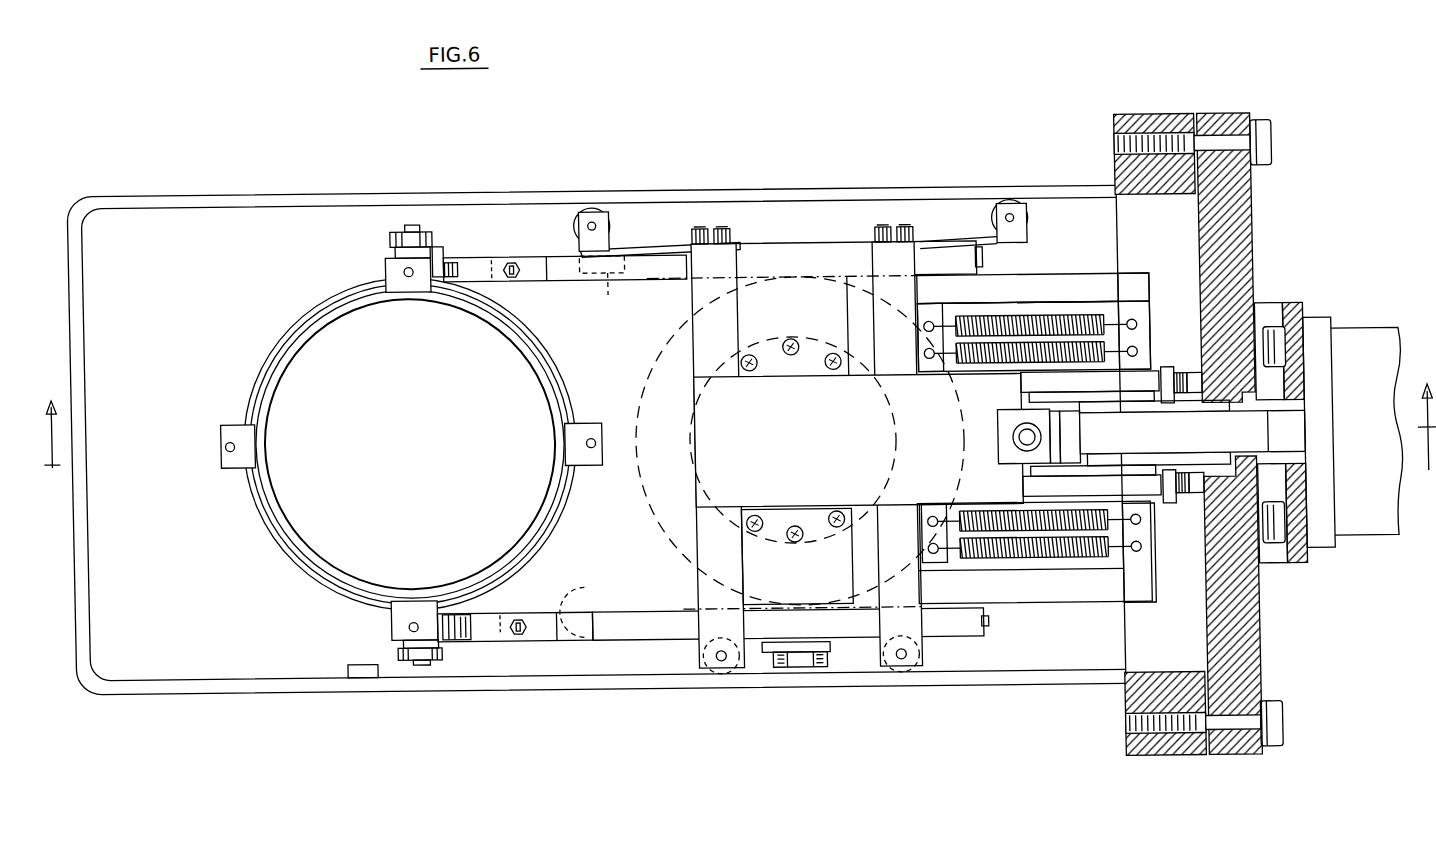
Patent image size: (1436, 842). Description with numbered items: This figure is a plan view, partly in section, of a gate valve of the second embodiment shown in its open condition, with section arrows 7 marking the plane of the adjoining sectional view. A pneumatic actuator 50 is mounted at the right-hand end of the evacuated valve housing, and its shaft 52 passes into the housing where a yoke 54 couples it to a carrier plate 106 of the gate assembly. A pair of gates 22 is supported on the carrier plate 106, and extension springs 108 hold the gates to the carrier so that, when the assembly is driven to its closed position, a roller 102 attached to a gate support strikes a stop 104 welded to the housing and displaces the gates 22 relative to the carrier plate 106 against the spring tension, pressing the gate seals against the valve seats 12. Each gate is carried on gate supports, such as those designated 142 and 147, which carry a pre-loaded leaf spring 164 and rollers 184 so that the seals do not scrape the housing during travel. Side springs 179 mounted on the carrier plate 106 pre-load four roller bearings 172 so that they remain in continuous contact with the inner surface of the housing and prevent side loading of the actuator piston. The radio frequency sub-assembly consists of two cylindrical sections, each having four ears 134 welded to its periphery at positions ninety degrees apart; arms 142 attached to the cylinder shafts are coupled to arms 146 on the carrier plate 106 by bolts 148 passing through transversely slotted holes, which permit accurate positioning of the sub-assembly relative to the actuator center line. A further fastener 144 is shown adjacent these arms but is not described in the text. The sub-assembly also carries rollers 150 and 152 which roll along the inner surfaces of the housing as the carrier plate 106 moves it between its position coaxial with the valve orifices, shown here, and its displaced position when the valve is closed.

The section line 7- 7 is at (739, 434).
The valve seat 12 is at (536, 356).
The gate 22 is at (645, 392).
The pneumatic actuator 50 is at (1360, 337).
The shaft 52 is at (1240, 443).
The yoke 54 is at (1008, 455).
The roller 102 is at (793, 670).
The stop 104 is at (361, 674).
The carrier plate 106 is at (1028, 553).
The extension spring 108 is at (1040, 357).
The ear 134 is at (390, 268).
The arm 142 is at (478, 262).
The bolt 144 is at (456, 259).
The arm 146 is at (556, 279).
The gate support 147 is at (1118, 585).
The bolt 148 is at (516, 260).
The roller 150 is at (412, 657).
The roller 152 is at (403, 233).
The leaf spring 164 is at (679, 271).
The roller bearing 172 is at (598, 206).
The side spring 179 is at (645, 240).
The roller 184 is at (1000, 626).